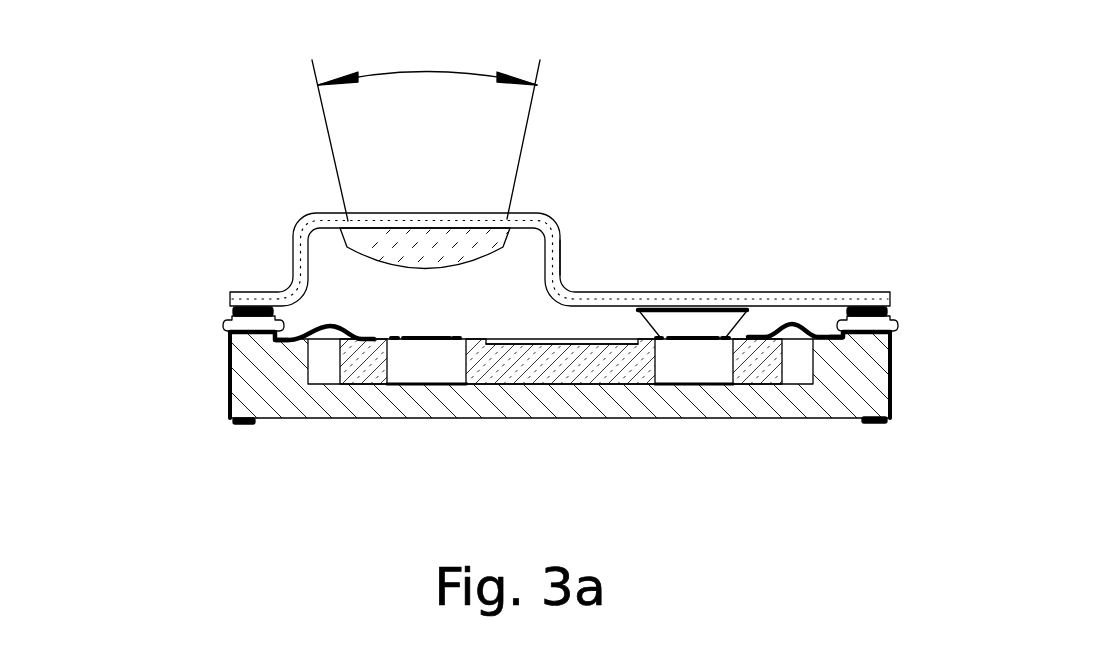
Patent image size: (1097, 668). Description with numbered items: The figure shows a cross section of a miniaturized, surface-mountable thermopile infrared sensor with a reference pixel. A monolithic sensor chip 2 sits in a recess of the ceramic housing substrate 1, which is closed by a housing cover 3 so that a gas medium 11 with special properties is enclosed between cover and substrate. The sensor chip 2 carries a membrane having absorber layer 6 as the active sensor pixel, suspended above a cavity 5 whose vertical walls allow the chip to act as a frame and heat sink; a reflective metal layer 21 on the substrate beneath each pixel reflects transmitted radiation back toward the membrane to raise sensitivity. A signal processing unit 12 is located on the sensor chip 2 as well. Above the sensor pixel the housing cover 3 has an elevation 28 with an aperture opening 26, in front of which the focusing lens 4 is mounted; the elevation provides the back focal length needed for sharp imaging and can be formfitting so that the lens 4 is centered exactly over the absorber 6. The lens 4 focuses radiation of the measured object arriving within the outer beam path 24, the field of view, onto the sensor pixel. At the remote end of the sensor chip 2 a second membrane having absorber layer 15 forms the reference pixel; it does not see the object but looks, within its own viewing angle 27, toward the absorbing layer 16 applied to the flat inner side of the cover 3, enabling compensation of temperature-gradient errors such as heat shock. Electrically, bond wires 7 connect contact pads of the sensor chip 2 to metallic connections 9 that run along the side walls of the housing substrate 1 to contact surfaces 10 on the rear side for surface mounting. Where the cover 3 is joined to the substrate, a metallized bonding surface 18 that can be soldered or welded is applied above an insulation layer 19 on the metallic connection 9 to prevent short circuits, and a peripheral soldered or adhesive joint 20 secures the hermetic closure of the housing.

The housing substrate 1 is at (867, 372).
The monolithic sensor chip 2 is at (560, 368).
The housing cover 3 is at (452, 337).
The focusing lens 4 is at (424, 243).
The cavity under pixel 5 is at (410, 367).
The membrane having absorber layer 6 is at (427, 340).
The bond wire 7 is at (802, 327).
The metallic connection 9 is at (230, 363).
The contact surface on housing rear side 10 is at (887, 421).
The gas medium 11 is at (331, 288).
The signal processing unit 12 is at (540, 343).
The membrane having absorber layer of the reference pixel 15 is at (693, 340).
The absorbing layer 16 is at (735, 307).
The metallized bonding surface 18 is at (233, 318).
The insulation layer 19 is at (240, 327).
The soldered or adhesive joint 20 is at (231, 311).
The reflective metal layer 21 is at (700, 388).
The outer beam path 24 is at (532, 106).
The aperture opening 26 is at (402, 337).
The viewing angle of the reference pixel 27 is at (730, 323).
The elevation of the housing cover 28 is at (552, 262).